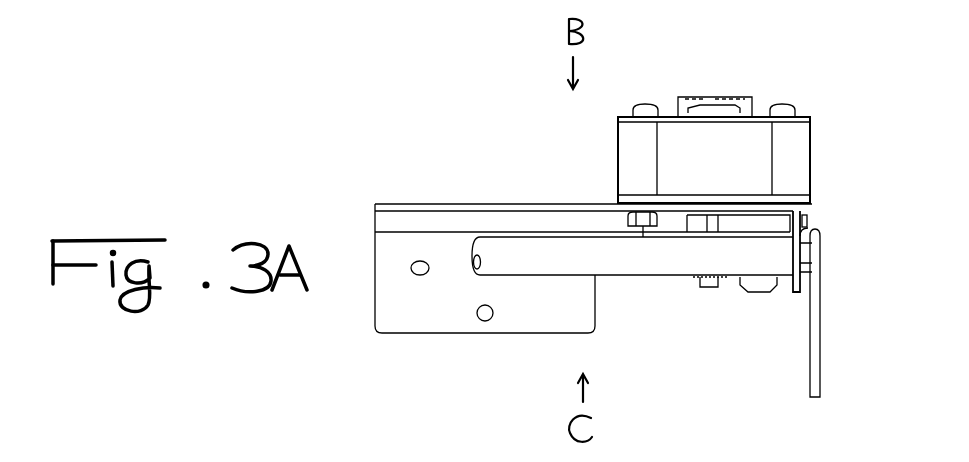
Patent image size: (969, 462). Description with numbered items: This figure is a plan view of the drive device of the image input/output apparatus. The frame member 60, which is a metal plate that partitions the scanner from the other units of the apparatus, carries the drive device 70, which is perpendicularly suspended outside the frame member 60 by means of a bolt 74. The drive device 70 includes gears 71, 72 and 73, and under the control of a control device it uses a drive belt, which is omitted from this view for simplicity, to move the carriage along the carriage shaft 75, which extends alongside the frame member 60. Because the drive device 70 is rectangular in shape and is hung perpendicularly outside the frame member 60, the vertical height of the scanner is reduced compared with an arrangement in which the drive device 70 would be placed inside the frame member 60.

The frame member 60 is at (470, 203).
The drive device 70 is at (811, 152).
The gear 71 is at (706, 287).
The gear 72 is at (758, 292).
The gear 73 is at (807, 222).
The bolt 74 is at (643, 237).
The carriage shaft 75 is at (547, 265).